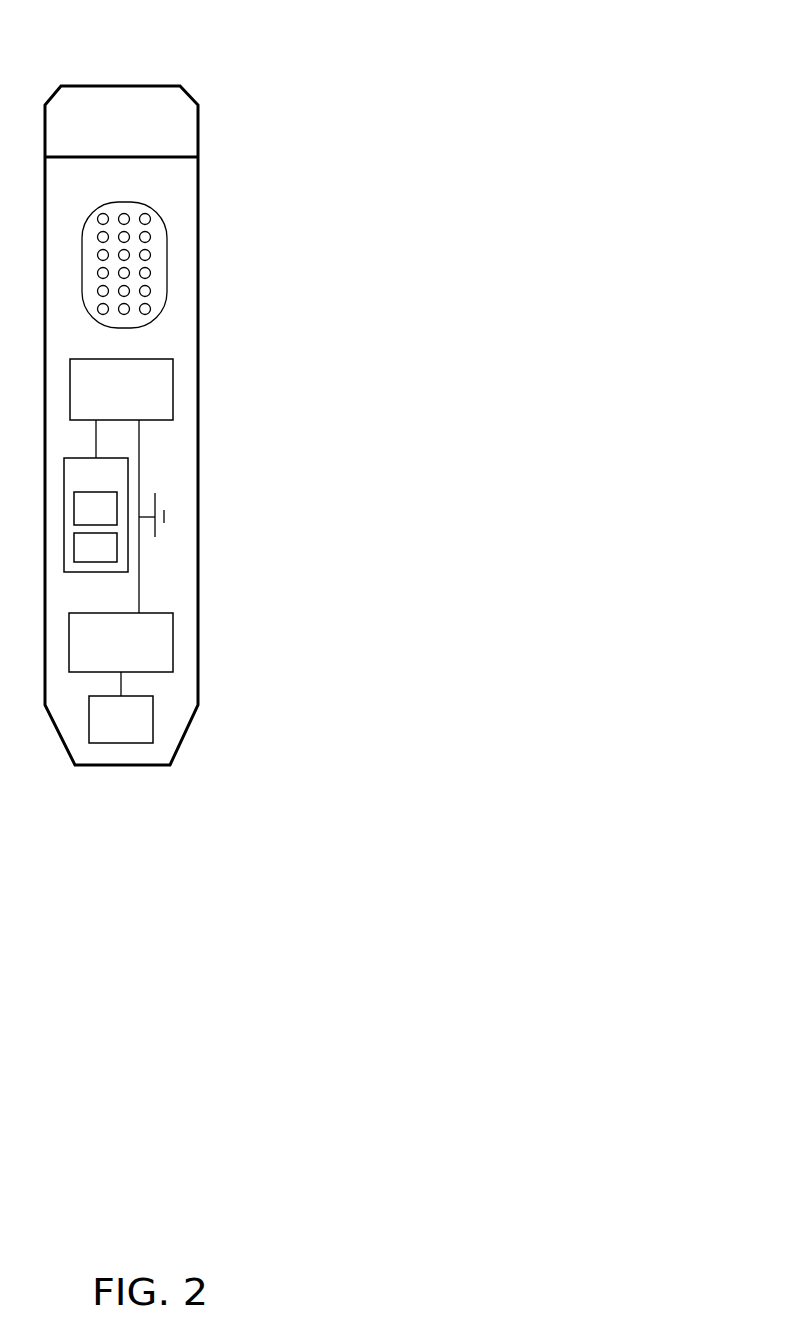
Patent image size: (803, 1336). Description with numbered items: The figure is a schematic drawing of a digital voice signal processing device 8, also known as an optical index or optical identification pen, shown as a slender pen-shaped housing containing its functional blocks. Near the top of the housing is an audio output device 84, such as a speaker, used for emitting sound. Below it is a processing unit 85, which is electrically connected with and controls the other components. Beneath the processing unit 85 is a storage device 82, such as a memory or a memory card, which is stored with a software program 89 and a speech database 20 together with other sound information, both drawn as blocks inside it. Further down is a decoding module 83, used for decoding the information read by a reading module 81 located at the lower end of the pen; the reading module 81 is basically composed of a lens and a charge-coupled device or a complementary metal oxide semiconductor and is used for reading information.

The digital voice signal processing device 8 is at (352, 66).
The audio output device 84 is at (166, 263).
The processing unit 85 is at (121, 389).
The storage device 82 is at (96, 515).
The software program 89 is at (95, 508).
The speech database 20 is at (95, 548).
The decoding module 83 is at (121, 642).
The reading module 81 is at (121, 719).